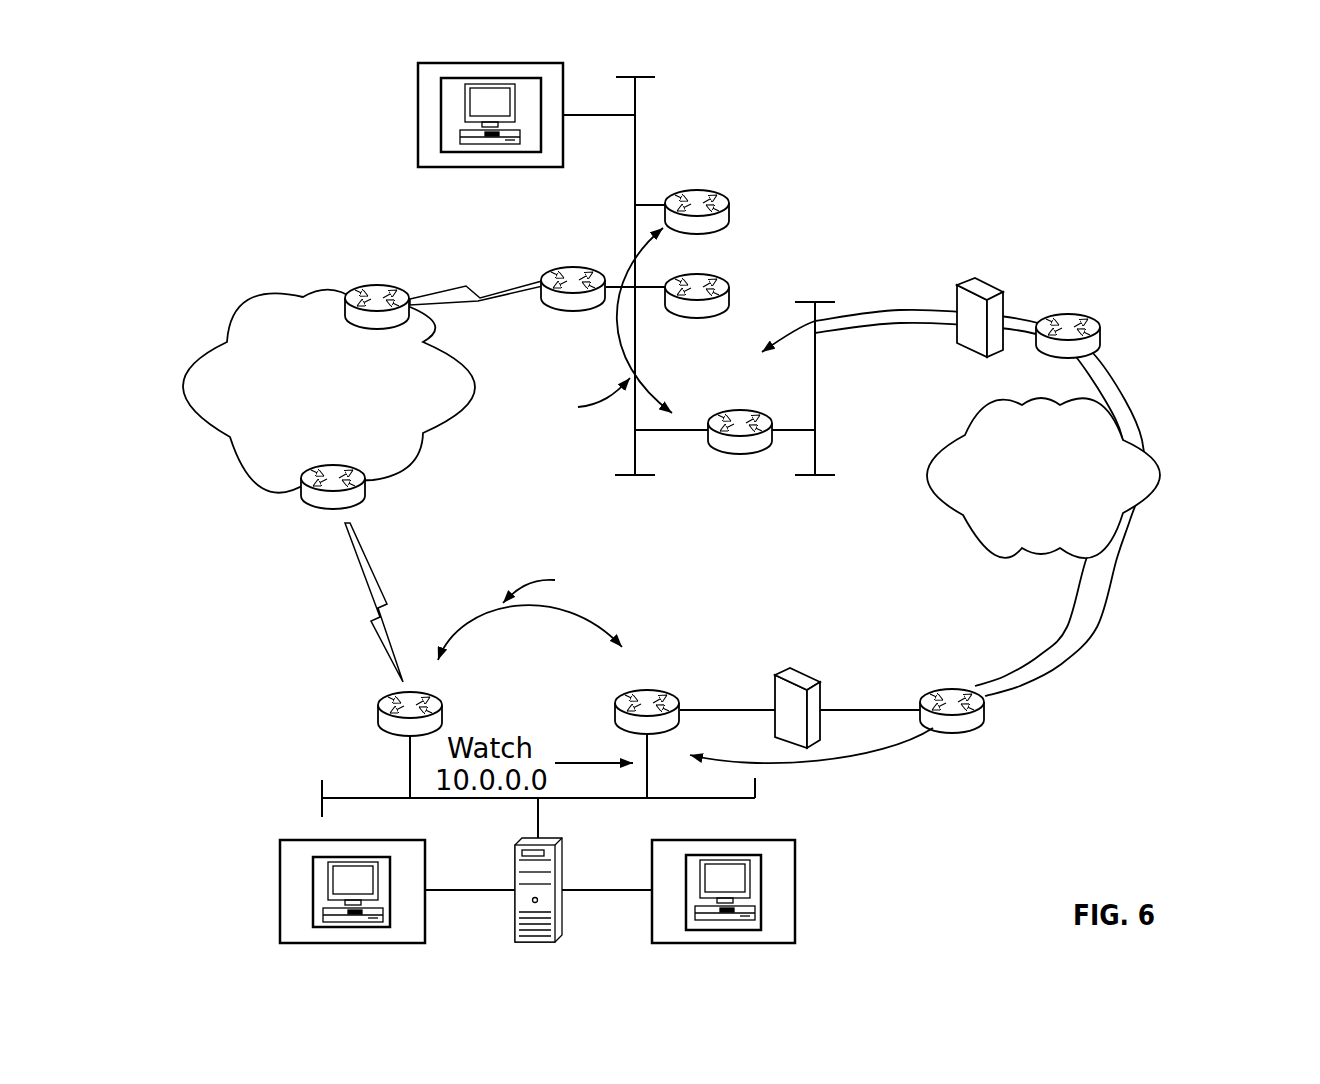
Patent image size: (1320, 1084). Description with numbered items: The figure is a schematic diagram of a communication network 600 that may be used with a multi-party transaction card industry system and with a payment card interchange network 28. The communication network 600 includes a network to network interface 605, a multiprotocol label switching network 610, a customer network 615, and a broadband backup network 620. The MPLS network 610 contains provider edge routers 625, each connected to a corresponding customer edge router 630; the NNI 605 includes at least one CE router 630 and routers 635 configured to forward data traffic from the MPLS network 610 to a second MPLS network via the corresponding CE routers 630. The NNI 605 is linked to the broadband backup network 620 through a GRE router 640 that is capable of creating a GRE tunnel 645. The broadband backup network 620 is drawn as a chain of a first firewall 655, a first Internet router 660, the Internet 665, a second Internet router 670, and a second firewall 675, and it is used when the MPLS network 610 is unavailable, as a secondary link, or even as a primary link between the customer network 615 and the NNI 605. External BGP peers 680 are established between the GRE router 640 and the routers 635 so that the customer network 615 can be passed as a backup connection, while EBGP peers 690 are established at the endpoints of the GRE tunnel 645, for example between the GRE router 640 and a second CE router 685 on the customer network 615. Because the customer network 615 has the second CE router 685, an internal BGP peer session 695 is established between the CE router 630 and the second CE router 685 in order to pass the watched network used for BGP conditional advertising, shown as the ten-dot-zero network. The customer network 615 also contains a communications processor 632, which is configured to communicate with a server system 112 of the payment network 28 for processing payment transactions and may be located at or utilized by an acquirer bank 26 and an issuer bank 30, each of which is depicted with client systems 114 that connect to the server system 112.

The communication network 600 is at (262, 155).
The network to network interface 605 is at (851, 237).
The multiprotocol label switching network 610 is at (252, 265).
The customer network 615 is at (255, 692).
The broadband backup network 620 is at (1176, 252).
The provider edge router 625 is at (375, 284).
The customer edge router 630 is at (575, 265).
The router 635 is at (730, 205).
The GRE router 640 is at (740, 450).
The GRE tunnel 645 is at (1067, 627).
The first firewall 655 is at (985, 285).
The first Internet router 660 is at (1100, 328).
The Internet 665 is at (1160, 478).
The second Internet router 670 is at (985, 708).
The second firewall 675 is at (805, 675).
The external BGP peers 680 is at (620, 348).
The second CE router 685 is at (680, 700).
The EBGP peers 690 is at (1117, 558).
The internal BGP peer session 695 is at (475, 612).
The server system 112 is at (441, 90).
The client systems 114 is at (313, 880).
The payment card interchange network 28 is at (457, 114).
The acquirer bank 26 is at (537, 891).
The issuer bank 30 is at (795, 928).
The communications processor 632 is at (560, 915).